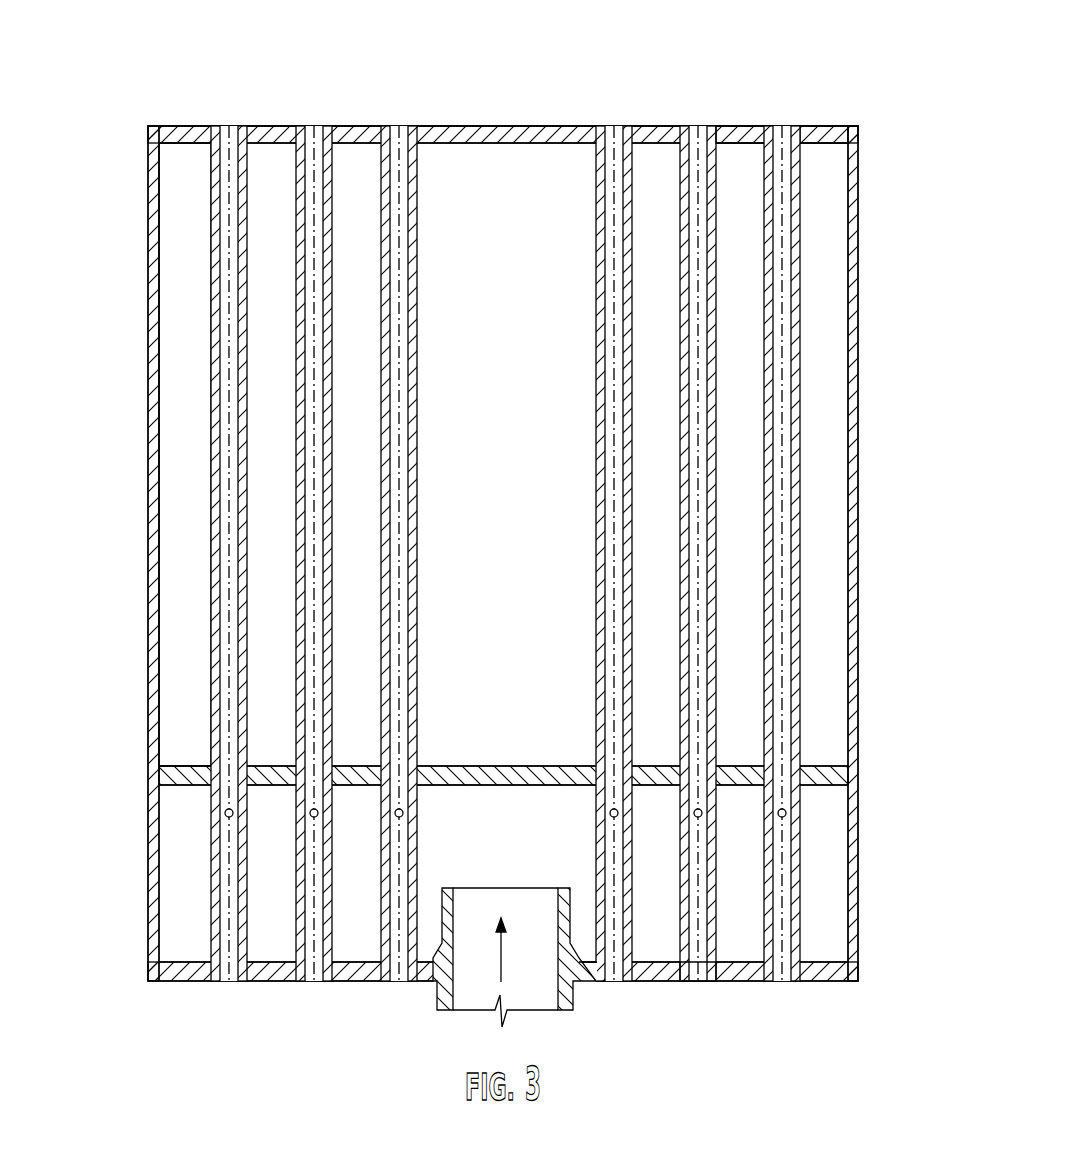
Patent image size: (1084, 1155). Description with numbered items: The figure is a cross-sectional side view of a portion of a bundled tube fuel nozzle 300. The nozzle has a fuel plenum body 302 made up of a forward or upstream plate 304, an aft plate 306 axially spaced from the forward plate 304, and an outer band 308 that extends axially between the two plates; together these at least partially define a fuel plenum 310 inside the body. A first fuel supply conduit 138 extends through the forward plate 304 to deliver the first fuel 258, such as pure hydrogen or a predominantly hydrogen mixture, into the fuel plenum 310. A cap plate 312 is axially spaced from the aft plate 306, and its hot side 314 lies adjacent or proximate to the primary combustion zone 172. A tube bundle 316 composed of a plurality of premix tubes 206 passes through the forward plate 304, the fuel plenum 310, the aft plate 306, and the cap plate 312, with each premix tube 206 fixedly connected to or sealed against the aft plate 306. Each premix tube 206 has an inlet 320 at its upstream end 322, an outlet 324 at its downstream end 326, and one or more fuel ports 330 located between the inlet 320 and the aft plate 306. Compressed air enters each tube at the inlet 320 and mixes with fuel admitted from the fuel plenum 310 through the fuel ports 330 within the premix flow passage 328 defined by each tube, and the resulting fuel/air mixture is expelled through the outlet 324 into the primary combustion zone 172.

The bundled tube fuel nozzle 300 is at (83, 152).
The primary combustion zone 172 is at (492, 91).
The fuel plenum body 302 is at (528, 556).
The forward plate 304 is at (815, 983).
The aft plate 306 is at (826, 778).
The outer band 308 is at (860, 920).
The fuel plenum 310 is at (537, 941).
The cap plate 312 is at (848, 135).
The hot side 314 is at (823, 128).
The tube bundle 316 is at (185, 415).
The inlet 320 is at (702, 982).
The upstream end 322 is at (686, 995).
The outlet 324 is at (690, 128).
The downstream end 326 is at (716, 110).
The premix flow passage 328 is at (698, 540).
The fuel port 330 is at (702, 815).
The premix tube 206 is at (483, 549).
The first fuel supply conduit 138 is at (578, 1000).
The first fuel 258 is at (504, 950).